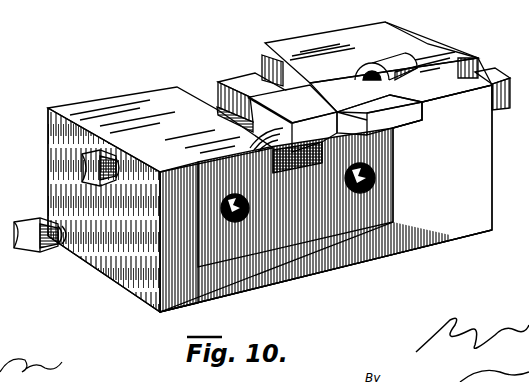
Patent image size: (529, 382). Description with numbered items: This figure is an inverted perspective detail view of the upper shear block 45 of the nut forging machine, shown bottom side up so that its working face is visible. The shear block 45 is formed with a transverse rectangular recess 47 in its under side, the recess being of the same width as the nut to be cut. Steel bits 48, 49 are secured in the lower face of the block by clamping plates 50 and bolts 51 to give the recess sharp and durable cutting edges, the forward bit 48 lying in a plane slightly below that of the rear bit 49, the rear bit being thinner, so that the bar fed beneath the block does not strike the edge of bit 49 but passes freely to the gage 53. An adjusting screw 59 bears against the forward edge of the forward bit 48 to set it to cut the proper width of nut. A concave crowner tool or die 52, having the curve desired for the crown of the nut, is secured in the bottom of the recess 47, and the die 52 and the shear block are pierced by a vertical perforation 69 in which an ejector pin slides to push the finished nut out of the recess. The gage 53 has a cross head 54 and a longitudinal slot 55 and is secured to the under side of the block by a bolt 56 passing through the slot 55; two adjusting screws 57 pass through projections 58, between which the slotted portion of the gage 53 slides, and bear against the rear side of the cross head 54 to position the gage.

The upper shear block 45 is at (253, 198).
The transverse rectangular recess 47 is at (210, 109).
The forward bit 48 is at (160, 130).
The rear bit 49 is at (292, 124).
The clamping plates 50 is at (295, 197).
The bolts 51 is at (246, 221).
The concave crowner tool or die 52 is at (320, 153).
The gage 53 is at (308, 83).
The cross head 54 is at (379, 112).
The longitudinal slot 55 is at (365, 67).
The bolt 56 is at (425, 43).
The adjusting screws 57 is at (412, 43).
The projections 58 is at (318, 53).
The adjusting screw 59 is at (82, 163).
The vertical perforation 69 is at (247, 97).